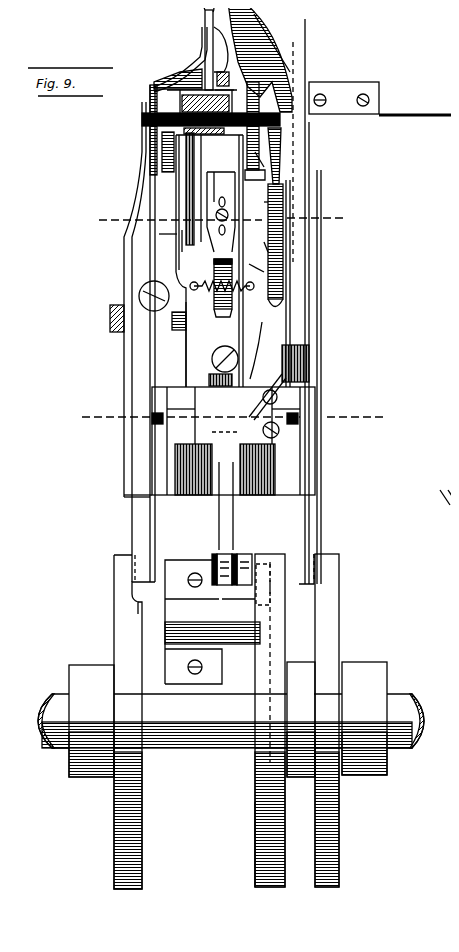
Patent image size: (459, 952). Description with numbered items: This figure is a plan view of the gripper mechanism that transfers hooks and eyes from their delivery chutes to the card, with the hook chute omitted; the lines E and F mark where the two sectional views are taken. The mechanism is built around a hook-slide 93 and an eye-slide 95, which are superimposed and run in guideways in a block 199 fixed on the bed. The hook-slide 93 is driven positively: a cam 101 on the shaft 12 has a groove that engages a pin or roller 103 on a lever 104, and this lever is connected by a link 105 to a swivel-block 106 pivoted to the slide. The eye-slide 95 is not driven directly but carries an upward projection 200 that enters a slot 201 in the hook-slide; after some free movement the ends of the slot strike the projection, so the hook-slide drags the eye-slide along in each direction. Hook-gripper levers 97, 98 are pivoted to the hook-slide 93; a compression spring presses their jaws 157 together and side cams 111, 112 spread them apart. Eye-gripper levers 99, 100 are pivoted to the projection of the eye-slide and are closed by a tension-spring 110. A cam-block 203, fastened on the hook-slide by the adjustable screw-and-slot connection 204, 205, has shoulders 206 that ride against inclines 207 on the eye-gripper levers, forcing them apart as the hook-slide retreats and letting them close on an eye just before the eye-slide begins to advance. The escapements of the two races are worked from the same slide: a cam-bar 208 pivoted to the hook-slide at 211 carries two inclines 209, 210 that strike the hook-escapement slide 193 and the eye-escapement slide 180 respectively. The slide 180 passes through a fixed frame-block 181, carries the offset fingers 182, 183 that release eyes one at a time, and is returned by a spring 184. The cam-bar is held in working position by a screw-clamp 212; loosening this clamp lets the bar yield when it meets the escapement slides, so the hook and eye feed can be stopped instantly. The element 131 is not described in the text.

The shaft 12 is at (210, 738).
The hook-slide 93 is at (270, 323).
The eye-slide 95 is at (212, 330).
The hook-gripper lever 97 is at (278, 247).
The hook-gripper lever 98 is at (152, 238).
The eye-gripper lever 99 is at (247, 267).
The eye-gripper lever 100 is at (157, 232).
The cam 101 is at (253, 797).
The pin or roller 103 is at (264, 562).
The lever 104 is at (242, 580).
The link 105 is at (222, 525).
The swivel-block 106 is at (147, 452).
The tension-spring 110 is at (232, 292).
The side cam 111 is at (332, 614).
The side cam 112 is at (118, 622).
The block 131 is at (232, 75).
The gripper jaws 157 is at (203, 19).
The slide 180 is at (186, 72).
The frame-block 181 is at (210, 134).
The finger 182 is at (170, 75).
The finger 183 is at (270, 22).
The spring 184 is at (142, 146).
The slide 193 is at (272, 201).
The block 199 is at (247, 495).
The upward projection 200 is at (208, 362).
The slot 201 is at (213, 312).
The cam-block 203 is at (212, 184).
The screw-and-slot connection 204 is at (277, 157).
The screw-and-slot connection 205 is at (214, 212).
The shoulders or cam-faces 206 is at (222, 277).
The inclines or shoulders 207 is at (182, 232).
The cam-bar 208 is at (285, 193).
The cam face or incline 209 is at (245, 172).
The cam face or incline 210 is at (285, 93).
The pivot 211 is at (282, 438).
The screw-clamp 212 is at (280, 397).
The section line E E is at (223, 227).
The section line F F is at (234, 425).